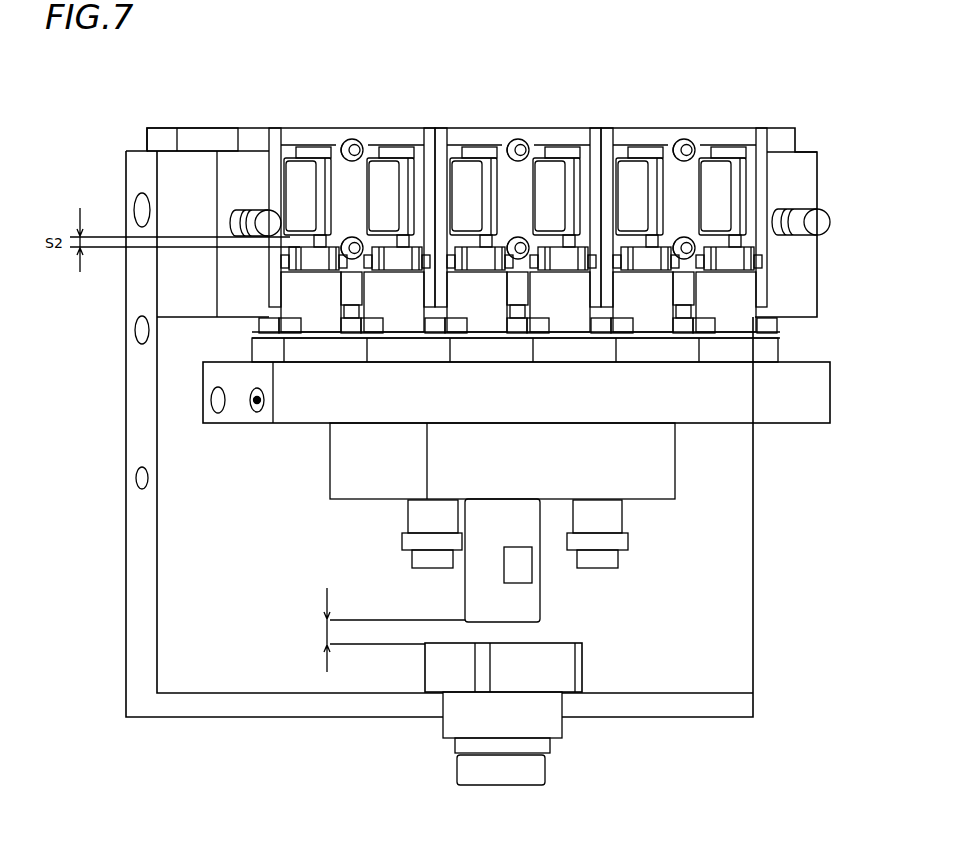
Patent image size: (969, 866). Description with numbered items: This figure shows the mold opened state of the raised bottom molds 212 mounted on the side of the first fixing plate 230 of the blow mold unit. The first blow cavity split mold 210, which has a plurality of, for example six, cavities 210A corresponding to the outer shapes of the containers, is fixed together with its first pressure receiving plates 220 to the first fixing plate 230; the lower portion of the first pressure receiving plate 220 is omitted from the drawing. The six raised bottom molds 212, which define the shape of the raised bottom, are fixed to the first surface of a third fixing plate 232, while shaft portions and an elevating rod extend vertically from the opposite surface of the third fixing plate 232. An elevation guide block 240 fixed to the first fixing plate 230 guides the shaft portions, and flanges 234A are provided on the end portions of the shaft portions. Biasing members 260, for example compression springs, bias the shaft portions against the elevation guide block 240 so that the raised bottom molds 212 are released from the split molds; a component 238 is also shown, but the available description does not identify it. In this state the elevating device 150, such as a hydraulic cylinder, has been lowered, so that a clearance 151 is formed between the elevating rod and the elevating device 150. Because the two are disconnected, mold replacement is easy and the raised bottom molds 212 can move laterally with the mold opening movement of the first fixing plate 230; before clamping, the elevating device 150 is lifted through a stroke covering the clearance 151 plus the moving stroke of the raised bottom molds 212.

The elevating device 150 is at (425, 667).
The clearance 151 is at (566, 632).
The first blow cavity split mold 210 is at (564, 223).
The cavities 210A is at (717, 170).
The raised bottom mold 212 is at (740, 253).
The first pressure receiving plate 220 is at (249, 128).
The first fixing plate 230 is at (264, 673).
The third fixing plate 232 is at (823, 394).
The flanges 234A is at (402, 540).
The center column 238 is at (537, 598).
The elevation guide block 240 is at (673, 457).
The biasing members 260 is at (408, 520).